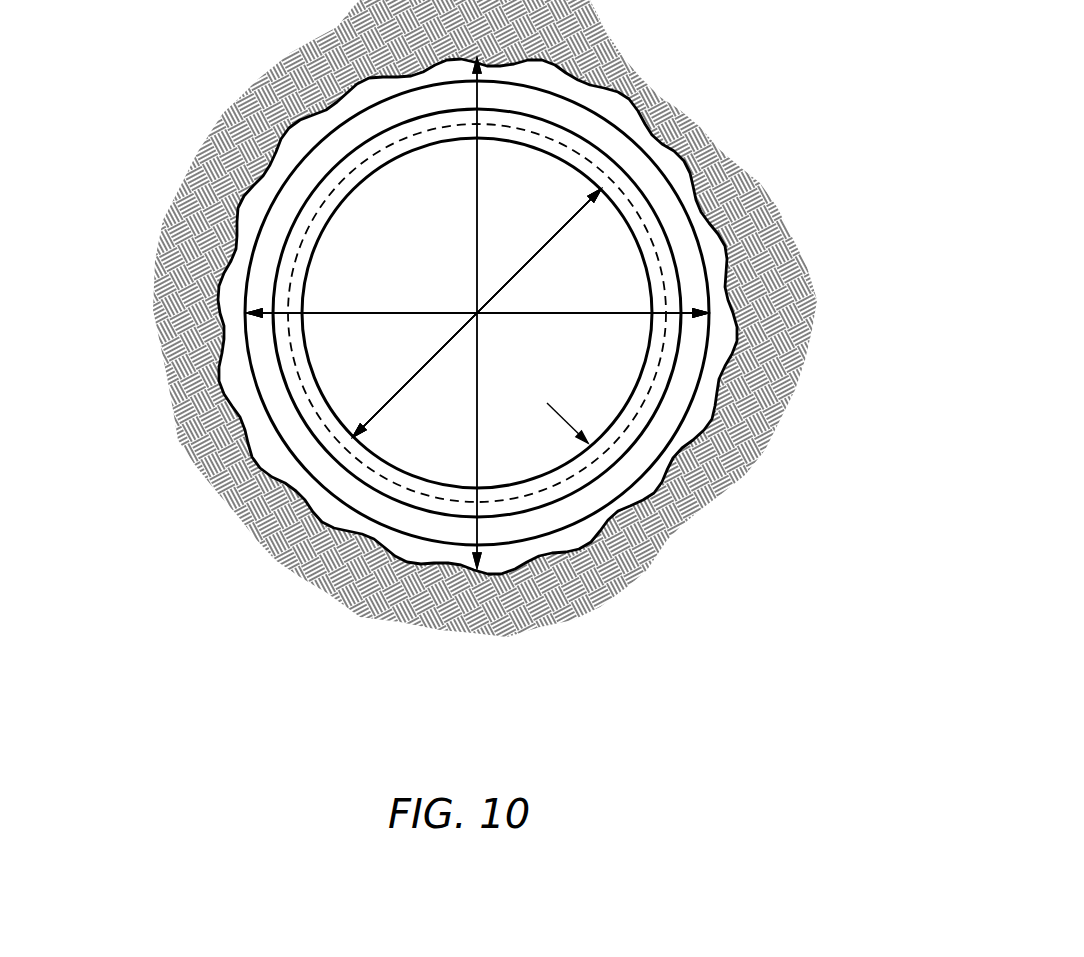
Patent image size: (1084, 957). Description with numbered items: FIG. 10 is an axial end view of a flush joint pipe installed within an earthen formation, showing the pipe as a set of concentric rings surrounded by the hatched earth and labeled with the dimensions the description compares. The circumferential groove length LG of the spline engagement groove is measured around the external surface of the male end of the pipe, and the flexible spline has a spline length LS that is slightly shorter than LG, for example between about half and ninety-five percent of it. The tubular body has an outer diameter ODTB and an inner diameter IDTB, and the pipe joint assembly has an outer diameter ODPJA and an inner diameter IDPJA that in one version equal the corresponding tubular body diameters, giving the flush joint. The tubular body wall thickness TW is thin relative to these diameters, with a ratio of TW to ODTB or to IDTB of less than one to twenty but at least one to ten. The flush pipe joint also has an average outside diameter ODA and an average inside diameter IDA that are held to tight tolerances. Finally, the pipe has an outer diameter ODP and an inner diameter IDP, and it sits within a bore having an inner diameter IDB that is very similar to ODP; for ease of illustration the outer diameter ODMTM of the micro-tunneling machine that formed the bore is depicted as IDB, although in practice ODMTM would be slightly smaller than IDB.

The wall thickness TW is at (633, 486).
The groove length LG is at (568, 128).
The spline length LS is at (615, 182).
The inner diameter of the tubular body IDTB is at (607, 279).
The inner diameter of the pipe joint assembly IDPJA is at (636, 253).
The average inside diameter IDA is at (627, 253).
The inner diameter of the pipe IDP is at (626, 253).
The outer diameter of the tubular body ODTB is at (394, 491).
The outer diameter of the pipe joint assembly ODPJA is at (394, 491).
The average outside diameter ODA is at (394, 491).
The outer diameter of the pipe ODP is at (394, 491).
The inner diameter of the bore IDB is at (539, 399).
The outer diameter of the micro-tunneling machine ODMTM is at (563, 399).